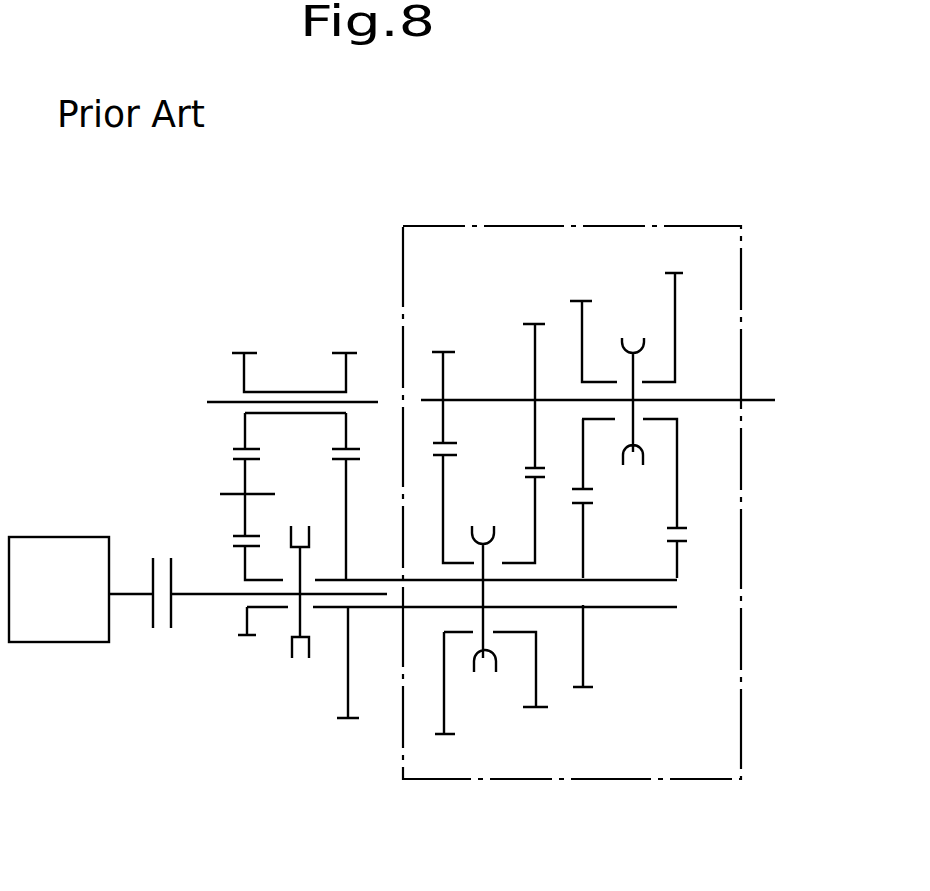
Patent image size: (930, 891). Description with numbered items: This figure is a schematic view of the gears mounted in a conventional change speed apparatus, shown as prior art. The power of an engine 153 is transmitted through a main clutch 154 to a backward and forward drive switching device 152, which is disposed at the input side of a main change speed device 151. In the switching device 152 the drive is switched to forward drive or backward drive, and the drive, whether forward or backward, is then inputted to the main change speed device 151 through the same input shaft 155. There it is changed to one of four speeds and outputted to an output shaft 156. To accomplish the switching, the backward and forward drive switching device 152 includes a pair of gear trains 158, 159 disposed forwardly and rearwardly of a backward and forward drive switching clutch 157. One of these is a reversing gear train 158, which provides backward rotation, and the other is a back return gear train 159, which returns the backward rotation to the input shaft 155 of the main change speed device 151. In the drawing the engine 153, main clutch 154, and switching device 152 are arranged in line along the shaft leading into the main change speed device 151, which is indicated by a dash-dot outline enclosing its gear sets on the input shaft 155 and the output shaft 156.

The main change speed device 151 is at (626, 224).
The backward and forward drive switching device 152 is at (305, 299).
The engine 153 is at (50, 642).
The main clutch 154 is at (162, 633).
The input shaft 155 is at (380, 608).
The output shaft 156 is at (710, 398).
The backward and forward drive switching clutch 157 is at (281, 653).
The reversing gear train 158 is at (235, 333).
The back return gear train 159 is at (354, 333).